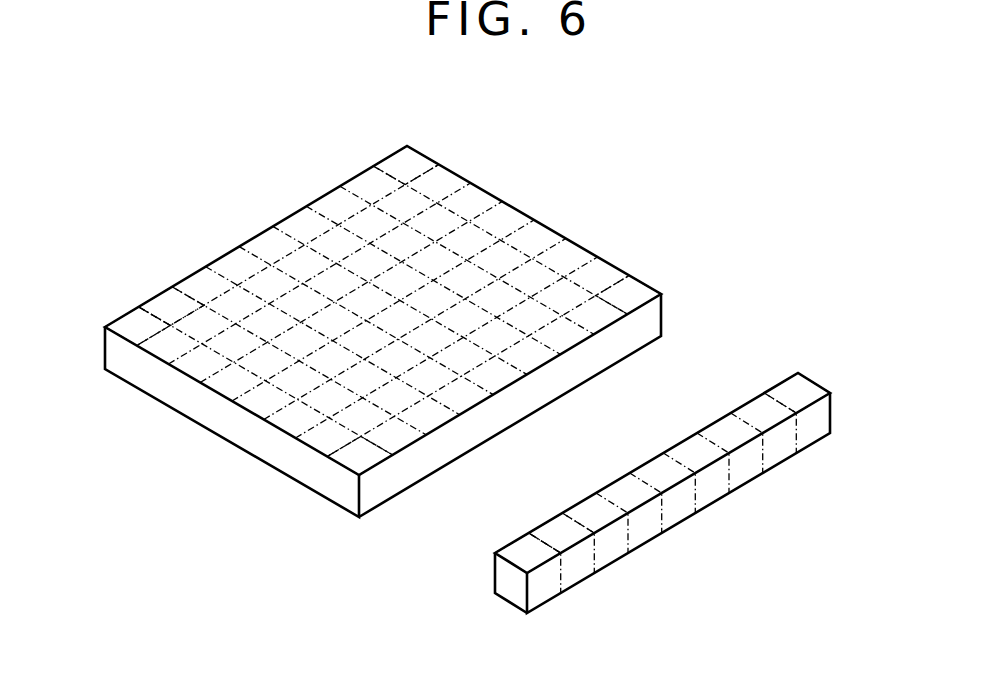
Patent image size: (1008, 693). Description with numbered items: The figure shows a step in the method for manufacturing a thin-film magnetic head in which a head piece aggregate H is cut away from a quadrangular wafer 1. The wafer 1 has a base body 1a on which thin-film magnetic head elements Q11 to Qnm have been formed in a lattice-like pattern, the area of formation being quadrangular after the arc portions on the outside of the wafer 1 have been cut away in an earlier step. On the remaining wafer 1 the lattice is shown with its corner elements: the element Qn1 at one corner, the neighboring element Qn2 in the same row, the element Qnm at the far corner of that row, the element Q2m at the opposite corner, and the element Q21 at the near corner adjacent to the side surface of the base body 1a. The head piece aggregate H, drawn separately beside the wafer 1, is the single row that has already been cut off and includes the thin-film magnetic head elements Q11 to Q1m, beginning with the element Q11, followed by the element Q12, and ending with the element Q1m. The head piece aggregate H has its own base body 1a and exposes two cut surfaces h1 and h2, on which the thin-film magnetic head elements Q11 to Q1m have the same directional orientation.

The wafer 1 is at (379, 378).
The base body 1a is at (190, 405).
The head piece aggregate H is at (697, 481).
The cut surface h1 is at (708, 493).
The cut surface h2 is at (608, 488).
The thin-film magnetic head element Qnm is at (406, 165).
The thin-film magnetic head element Qn1 is at (128, 327).
The thin-film magnetic head element Qn2 is at (168, 305).
The thin-film magnetic head element Q2m is at (635, 292).
The thin-film magnetic head element Q21 is at (347, 458).
The thin-film magnetic head element Q11 is at (540, 562).
The thin-film magnetic head element Q12 is at (592, 538).
The thin-film magnetic head element Q1m is at (807, 402).